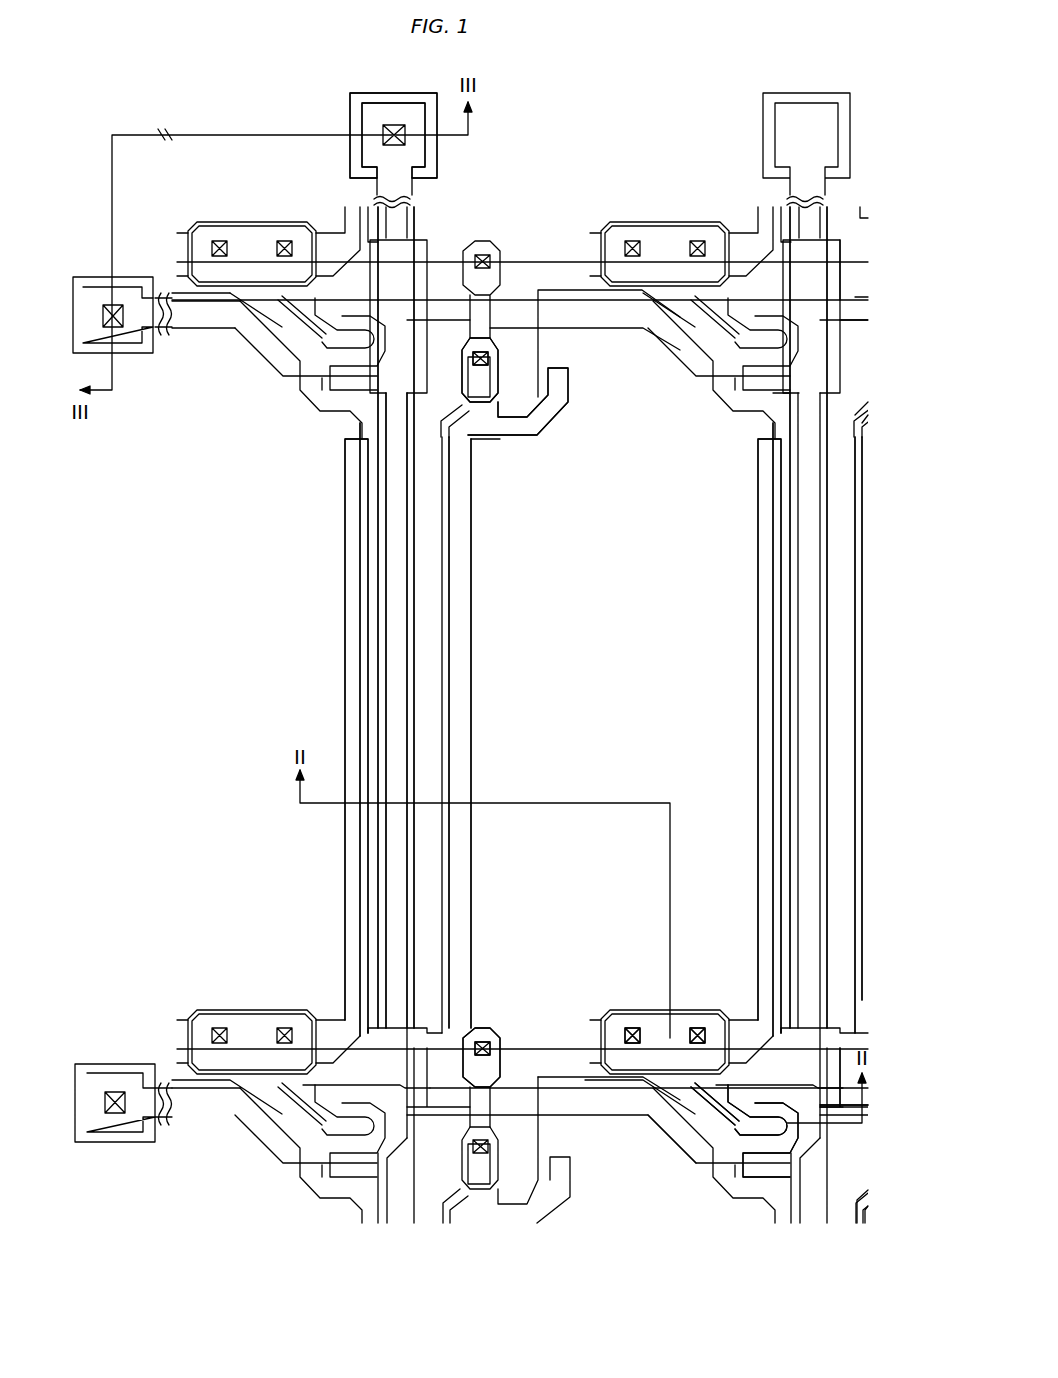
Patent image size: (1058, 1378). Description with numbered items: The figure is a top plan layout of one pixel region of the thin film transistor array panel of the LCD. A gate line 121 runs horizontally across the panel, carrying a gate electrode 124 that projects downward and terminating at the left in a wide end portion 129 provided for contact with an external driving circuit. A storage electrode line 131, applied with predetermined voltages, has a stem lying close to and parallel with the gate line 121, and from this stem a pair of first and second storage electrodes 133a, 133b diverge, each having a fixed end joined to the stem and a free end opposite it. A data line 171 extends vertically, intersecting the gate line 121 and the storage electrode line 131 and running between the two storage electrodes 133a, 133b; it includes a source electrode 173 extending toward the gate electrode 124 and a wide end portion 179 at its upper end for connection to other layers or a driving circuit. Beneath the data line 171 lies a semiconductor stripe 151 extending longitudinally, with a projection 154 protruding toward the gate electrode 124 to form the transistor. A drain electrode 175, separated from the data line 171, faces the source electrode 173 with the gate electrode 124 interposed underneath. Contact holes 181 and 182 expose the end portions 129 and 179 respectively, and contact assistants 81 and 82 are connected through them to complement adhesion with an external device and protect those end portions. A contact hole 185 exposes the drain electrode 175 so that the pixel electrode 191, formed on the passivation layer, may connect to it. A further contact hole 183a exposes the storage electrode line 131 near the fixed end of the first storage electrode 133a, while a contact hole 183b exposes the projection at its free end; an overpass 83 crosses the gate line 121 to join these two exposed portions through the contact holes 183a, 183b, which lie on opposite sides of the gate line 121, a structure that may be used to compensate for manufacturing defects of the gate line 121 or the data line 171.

The gate line 121 is at (597, 1115).
The gate electrode 124 is at (825, 1125).
The wide end portion 129 is at (140, 352).
The storage electrode line 131 is at (860, 1002).
The first storage electrode 133a is at (472, 497).
The second storage electrode 133b is at (345, 908).
The semiconductor stripe 151 is at (388, 635).
The projection 154 is at (740, 1150).
The data line 171 is at (378, 585).
The source electrode 173 is at (765, 1182).
The drain electrode 175 is at (730, 1122).
The wide end portion 179 is at (350, 114).
The contact hole 181 is at (108, 310).
The contact hole 182 is at (393, 128).
The contact hole 183a is at (480, 1040).
The contact hole 183b is at (490, 352).
The contact hole 185 is at (698, 1030).
The pixel electrode 191 is at (452, 592).
The contact assistant 81 is at (130, 360).
The contact assistant 82 is at (437, 152).
The overpass 83 is at (510, 376).